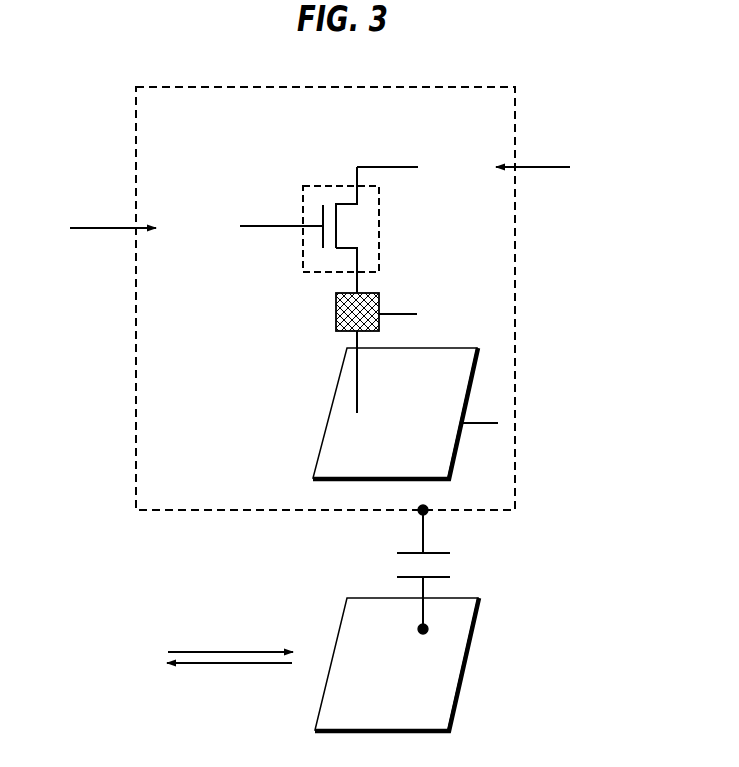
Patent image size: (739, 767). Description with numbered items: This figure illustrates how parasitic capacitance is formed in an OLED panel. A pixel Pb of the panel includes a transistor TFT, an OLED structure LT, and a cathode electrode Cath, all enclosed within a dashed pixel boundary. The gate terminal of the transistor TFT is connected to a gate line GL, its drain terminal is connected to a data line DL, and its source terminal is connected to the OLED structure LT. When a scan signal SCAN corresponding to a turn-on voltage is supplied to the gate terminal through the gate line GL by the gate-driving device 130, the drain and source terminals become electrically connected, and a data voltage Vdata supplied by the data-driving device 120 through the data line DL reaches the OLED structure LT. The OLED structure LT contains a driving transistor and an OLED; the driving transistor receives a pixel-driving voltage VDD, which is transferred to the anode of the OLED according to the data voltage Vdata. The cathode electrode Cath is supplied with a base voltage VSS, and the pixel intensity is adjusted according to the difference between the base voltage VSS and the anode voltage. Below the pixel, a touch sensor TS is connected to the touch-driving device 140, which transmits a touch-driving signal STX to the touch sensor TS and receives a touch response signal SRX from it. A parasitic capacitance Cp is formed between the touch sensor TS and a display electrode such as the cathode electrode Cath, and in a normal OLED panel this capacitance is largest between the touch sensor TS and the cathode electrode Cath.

The data-driving device 120 is at (563, 167).
The gate-driving device 130 is at (83, 229).
The touch-driving device 140 is at (186, 663).
The pixel Pb is at (190, 120).
The transistor TFT is at (310, 183).
The data line DL is at (380, 168).
The gate line GL is at (270, 232).
The OLED structure LT is at (337, 330).
The cathode electrode Cath is at (395, 413).
The touch sensor TS is at (397, 664).
The parasitic capacitance Cp is at (447, 569).
The pixel-driving voltage VDD is at (431, 315).
The base voltage VSS is at (510, 424).
The data voltage Vdata is at (461, 167).
The scan signal SCAN is at (194, 229).
The touch-driving signal STX is at (226, 630).
The touch response signal SRX is at (226, 687).